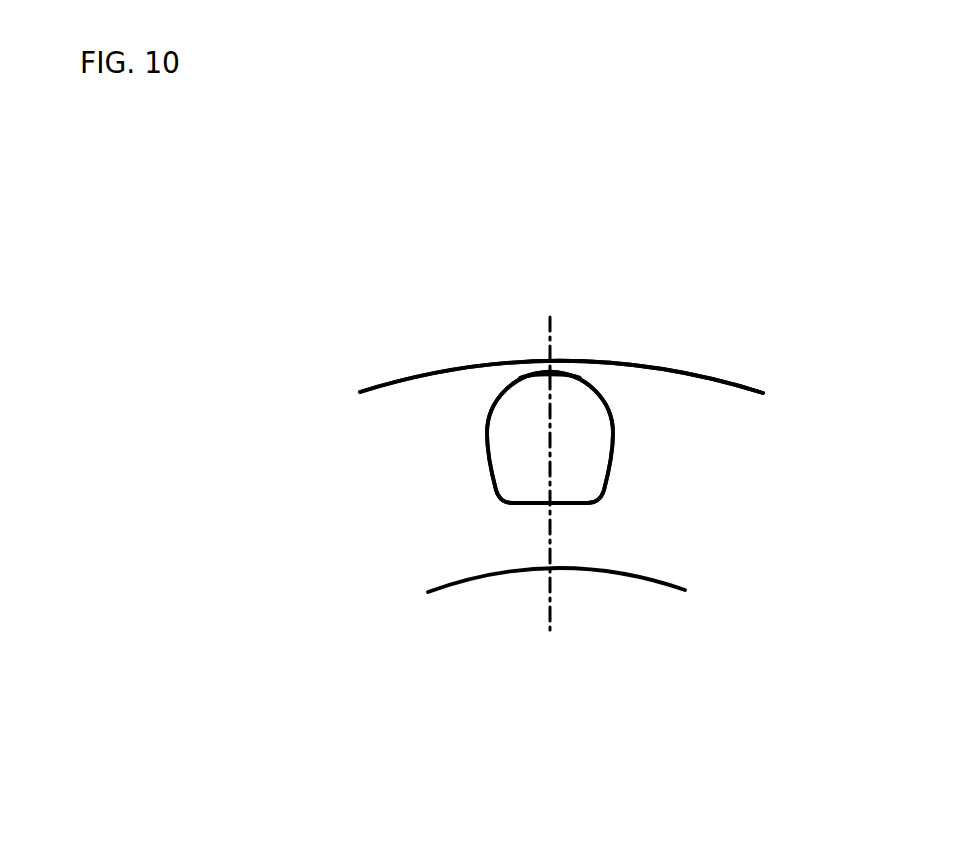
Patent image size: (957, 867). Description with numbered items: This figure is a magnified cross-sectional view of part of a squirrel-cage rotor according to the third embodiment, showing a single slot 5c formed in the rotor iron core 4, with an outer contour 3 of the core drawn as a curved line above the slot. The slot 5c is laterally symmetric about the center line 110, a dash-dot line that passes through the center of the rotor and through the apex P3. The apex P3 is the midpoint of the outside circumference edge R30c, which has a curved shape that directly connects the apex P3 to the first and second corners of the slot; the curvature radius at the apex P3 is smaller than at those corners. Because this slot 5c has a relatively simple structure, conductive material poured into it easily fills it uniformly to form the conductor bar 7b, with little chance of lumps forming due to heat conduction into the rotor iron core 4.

The rotor iron core 4 is at (383, 386).
The tread portion 3 is at (752, 357).
The slot 5c is at (600, 448).
The conductor bar 7b is at (584, 477).
The apex P3 is at (548, 352).
The outside circumference edge R30c is at (567, 372).
The center line 110 is at (550, 618).